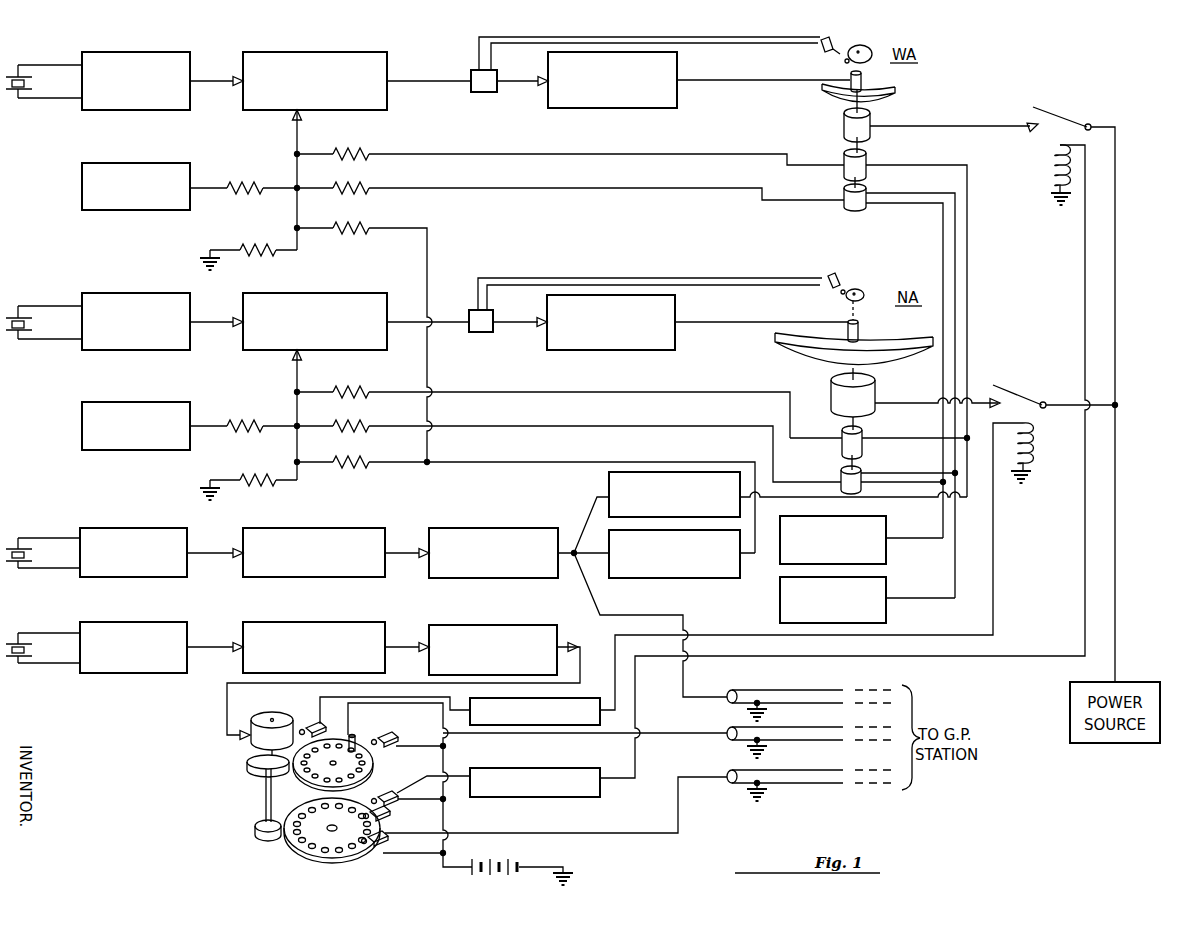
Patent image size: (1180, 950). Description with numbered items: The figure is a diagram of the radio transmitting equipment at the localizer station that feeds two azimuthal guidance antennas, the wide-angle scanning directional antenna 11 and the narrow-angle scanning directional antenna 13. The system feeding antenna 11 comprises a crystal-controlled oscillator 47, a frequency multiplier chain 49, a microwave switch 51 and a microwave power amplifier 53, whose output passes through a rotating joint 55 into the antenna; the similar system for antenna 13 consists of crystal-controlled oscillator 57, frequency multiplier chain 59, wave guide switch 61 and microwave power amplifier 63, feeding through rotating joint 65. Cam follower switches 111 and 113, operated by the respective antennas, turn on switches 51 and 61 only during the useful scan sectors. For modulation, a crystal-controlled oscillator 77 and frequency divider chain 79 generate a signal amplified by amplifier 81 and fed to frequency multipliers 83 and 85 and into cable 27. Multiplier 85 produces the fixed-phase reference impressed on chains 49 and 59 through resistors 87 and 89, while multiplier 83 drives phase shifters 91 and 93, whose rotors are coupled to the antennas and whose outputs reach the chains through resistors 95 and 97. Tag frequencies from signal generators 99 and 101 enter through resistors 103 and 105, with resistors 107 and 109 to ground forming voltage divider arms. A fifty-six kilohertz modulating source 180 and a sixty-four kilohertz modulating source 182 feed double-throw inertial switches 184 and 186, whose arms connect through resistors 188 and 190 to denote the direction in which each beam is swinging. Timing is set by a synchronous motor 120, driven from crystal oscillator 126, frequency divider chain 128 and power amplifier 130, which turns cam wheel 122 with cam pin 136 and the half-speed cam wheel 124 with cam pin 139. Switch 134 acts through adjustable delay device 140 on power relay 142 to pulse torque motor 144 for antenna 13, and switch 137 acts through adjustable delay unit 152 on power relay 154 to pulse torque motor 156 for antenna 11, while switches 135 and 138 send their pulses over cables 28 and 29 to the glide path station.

The crystal-controlled oscillator 47 is at (133, 58).
The frequency multiplier chain 49 is at (313, 57).
The microwave switch 51 is at (484, 92).
The microwave power amplifier 53 is at (610, 104).
The cam follower switch 111 is at (815, 50).
The rotating joint 55 is at (862, 80).
The wide-angle scanning directional antenna 11 is at (893, 92).
The torque motor 156 is at (845, 129).
The phase shifter 91 is at (866, 167).
The double-throw inertial switch 184 is at (853, 210).
The power relay 154 is at (1038, 148).
The signal generator 99 is at (73, 180).
The resistor 103 is at (245, 181).
The resistor 95 is at (367, 150).
The resistor 188 is at (367, 186).
The resistor 107 is at (250, 240).
The resistor 87 is at (365, 234).
The crystal-controlled oscillator 57 is at (127, 298).
The frequency multiplier chain 59 is at (317, 298).
The wave guide switch 61 is at (483, 332).
The microwave power amplifier 63 is at (615, 350).
The cam follower switch 113 is at (822, 293).
The rotating joint 65 is at (859, 330).
The narrow-angle scanning directional antenna 13 is at (892, 365).
The torque motor 144 is at (868, 406).
The phase shifter 93 is at (863, 446).
The double-throw inertial switch 186 is at (840, 476).
The power relay 142 is at (1046, 432).
The signal generator 101 is at (75, 437).
The resistor 105 is at (250, 421).
The resistor 97 is at (352, 388).
The resistor 190 is at (368, 425).
The resistor 109 is at (254, 472).
The resistor 89 is at (365, 468).
The crystal-controlled oscillator 77 is at (118, 530).
The frequency divider chain 79 is at (316, 530).
The amplifier 81 is at (502, 530).
The frequency multiplier 83 is at (609, 486).
The frequency multiplier 85 is at (644, 575).
The 56 kh. modulating source 180 is at (876, 531).
The 64 kh. modulating source 182 is at (878, 593).
The piezoelectric crystal oscillator 126 is at (148, 623).
The frequency divider chain 128 is at (309, 623).
The power amplifier 130 is at (500, 625).
The adjustable delay device 140 is at (588, 700).
The adjustable delay unit 152 is at (556, 770).
The synchronous motor 120 is at (262, 716).
The switch 134 is at (310, 722).
The cam pin 136 is at (357, 729).
The switch 135 is at (389, 735).
The cam wheel 122 is at (374, 769).
The switch 137 is at (396, 802).
The cam pin 139 is at (388, 818).
The cam wheel 124 is at (318, 858).
The switch 138 is at (376, 850).
The cable 27 is at (805, 699).
The coaxial cable 28 is at (805, 735).
The cable 29 is at (803, 778).